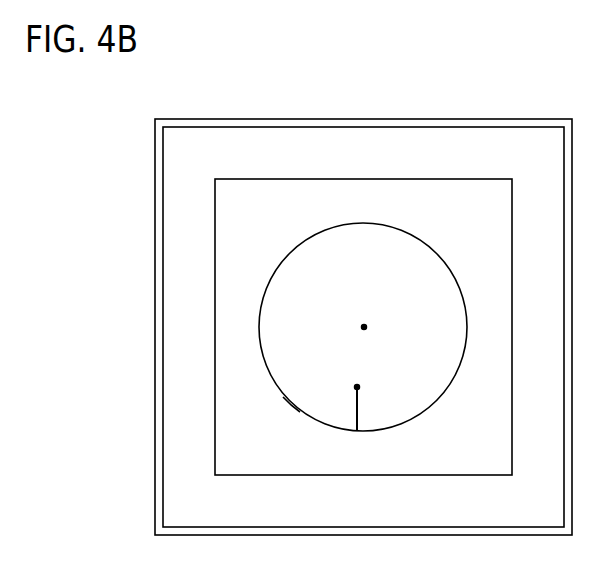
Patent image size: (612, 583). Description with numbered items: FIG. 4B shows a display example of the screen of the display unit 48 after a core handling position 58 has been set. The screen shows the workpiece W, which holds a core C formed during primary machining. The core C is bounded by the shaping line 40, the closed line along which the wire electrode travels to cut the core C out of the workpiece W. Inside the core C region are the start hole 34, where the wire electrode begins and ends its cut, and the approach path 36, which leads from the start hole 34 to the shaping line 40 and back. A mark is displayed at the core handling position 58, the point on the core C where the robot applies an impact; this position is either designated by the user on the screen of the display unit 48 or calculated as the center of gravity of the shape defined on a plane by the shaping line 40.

The display unit 48 is at (433, 118).
The workpiece W is at (473, 188).
The core C is at (398, 257).
The core handling position 58 is at (362, 323).
The start hole 34 is at (358, 384).
The approach path 36 is at (355, 410).
The shaping line 40 is at (283, 397).